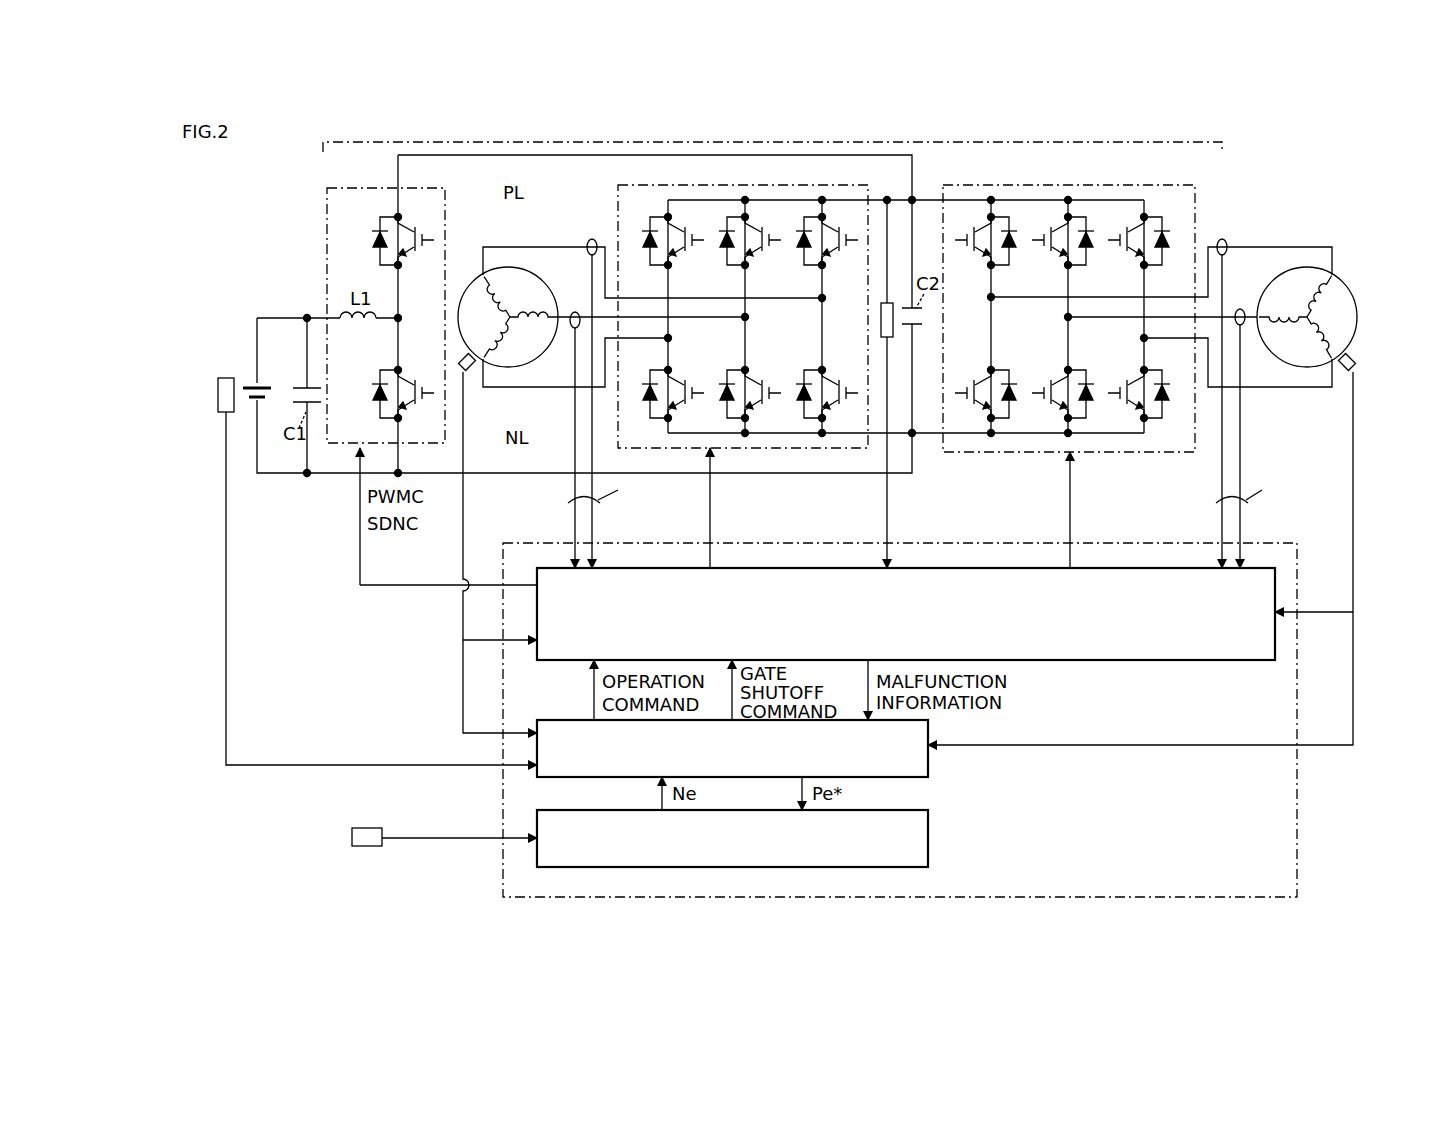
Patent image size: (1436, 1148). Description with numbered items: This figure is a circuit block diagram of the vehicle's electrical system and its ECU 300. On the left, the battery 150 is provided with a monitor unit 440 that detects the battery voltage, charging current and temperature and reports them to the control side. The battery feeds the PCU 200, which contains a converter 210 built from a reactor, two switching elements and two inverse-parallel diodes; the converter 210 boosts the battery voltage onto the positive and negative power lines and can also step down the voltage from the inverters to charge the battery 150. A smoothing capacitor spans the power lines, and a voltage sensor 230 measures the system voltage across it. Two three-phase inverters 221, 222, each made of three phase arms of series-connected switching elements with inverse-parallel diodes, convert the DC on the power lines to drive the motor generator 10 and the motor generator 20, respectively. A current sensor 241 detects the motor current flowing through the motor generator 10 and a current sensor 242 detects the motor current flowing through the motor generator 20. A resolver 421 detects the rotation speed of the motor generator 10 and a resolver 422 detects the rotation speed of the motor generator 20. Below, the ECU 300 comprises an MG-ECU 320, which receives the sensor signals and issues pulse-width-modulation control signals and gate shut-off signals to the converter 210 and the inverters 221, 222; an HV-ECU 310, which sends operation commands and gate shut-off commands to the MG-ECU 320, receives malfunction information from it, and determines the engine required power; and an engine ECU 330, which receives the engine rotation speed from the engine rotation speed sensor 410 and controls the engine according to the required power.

The motor generator 10 is at (483, 270).
The motor generator 20 is at (1342, 282).
The battery 150 is at (266, 390).
The PCU 200 is at (772, 133).
The converter 210 is at (352, 188).
The inverter 221 is at (808, 188).
The inverter 222 is at (1135, 188).
The voltage sensor 230 is at (887, 302).
The current sensor 241 is at (592, 238).
The current sensor 242 is at (1222, 238).
The ECU 300 is at (1270, 543).
The HV-ECU 310 is at (930, 725).
The MG-ECU 320 is at (1258, 663).
The engine ECU 330 is at (930, 838).
The engine rotation speed sensor 410 is at (352, 838).
The resolver 421 is at (470, 372).
The resolver 422 is at (1356, 368).
The monitor unit 440 is at (373, 554).